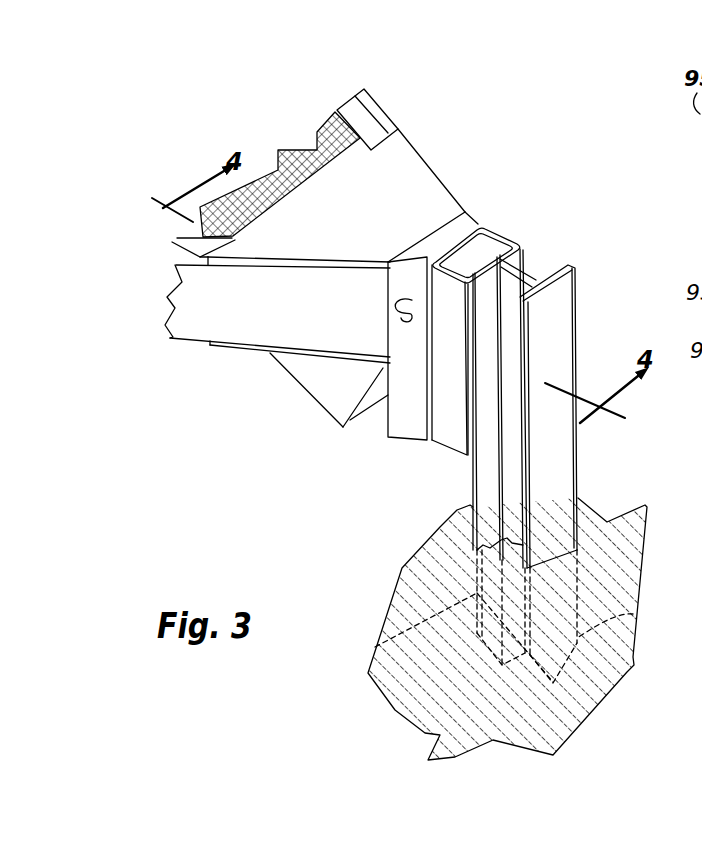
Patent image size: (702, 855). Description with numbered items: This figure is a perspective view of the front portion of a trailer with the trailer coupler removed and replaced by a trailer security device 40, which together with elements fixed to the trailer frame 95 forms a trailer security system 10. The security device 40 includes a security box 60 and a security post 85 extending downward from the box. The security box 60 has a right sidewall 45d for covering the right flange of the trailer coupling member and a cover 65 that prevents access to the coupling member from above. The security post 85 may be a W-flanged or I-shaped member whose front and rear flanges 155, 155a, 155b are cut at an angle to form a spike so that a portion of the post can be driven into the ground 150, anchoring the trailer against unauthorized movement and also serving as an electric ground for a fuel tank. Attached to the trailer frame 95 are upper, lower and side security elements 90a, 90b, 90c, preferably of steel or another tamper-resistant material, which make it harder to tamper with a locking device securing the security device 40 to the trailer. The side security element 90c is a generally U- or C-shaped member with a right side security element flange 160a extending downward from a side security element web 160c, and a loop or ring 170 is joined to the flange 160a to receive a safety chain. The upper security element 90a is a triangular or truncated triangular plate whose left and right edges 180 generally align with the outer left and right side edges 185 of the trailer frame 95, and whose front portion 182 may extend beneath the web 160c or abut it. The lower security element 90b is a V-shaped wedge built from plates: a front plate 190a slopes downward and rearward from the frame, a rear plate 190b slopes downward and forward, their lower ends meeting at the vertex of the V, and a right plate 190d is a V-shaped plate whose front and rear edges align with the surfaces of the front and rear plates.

The trailer security system 10 is at (489, 123).
The trailer security device 40 is at (419, 420).
The right sidewall 45d is at (462, 458).
The security box 60 is at (505, 237).
The cover 65 is at (508, 232).
The security post 85 is at (560, 362).
The upper security element 90a is at (395, 158).
The lower security element 90b is at (343, 405).
The side security element 90c is at (386, 440).
The trailer frame 95 is at (352, 103).
The ground 150 is at (636, 665).
The flanges of the security post 155 is at (633, 614).
The front flange 155a is at (574, 640).
The rear flange 155b is at (375, 647).
The right side security element flange 160a is at (400, 420).
The side security element web 160c is at (457, 232).
The loop or ring 170 is at (388, 312).
The left and right edges of the upper security element 180 is at (252, 258).
The front portion of the upper security element 182 is at (465, 210).
The outer left and right side edges of the trailer frame 185 is at (380, 108).
The front plate 190a is at (368, 402).
The rear plate 190b is at (283, 366).
The right plate 190d is at (327, 382).